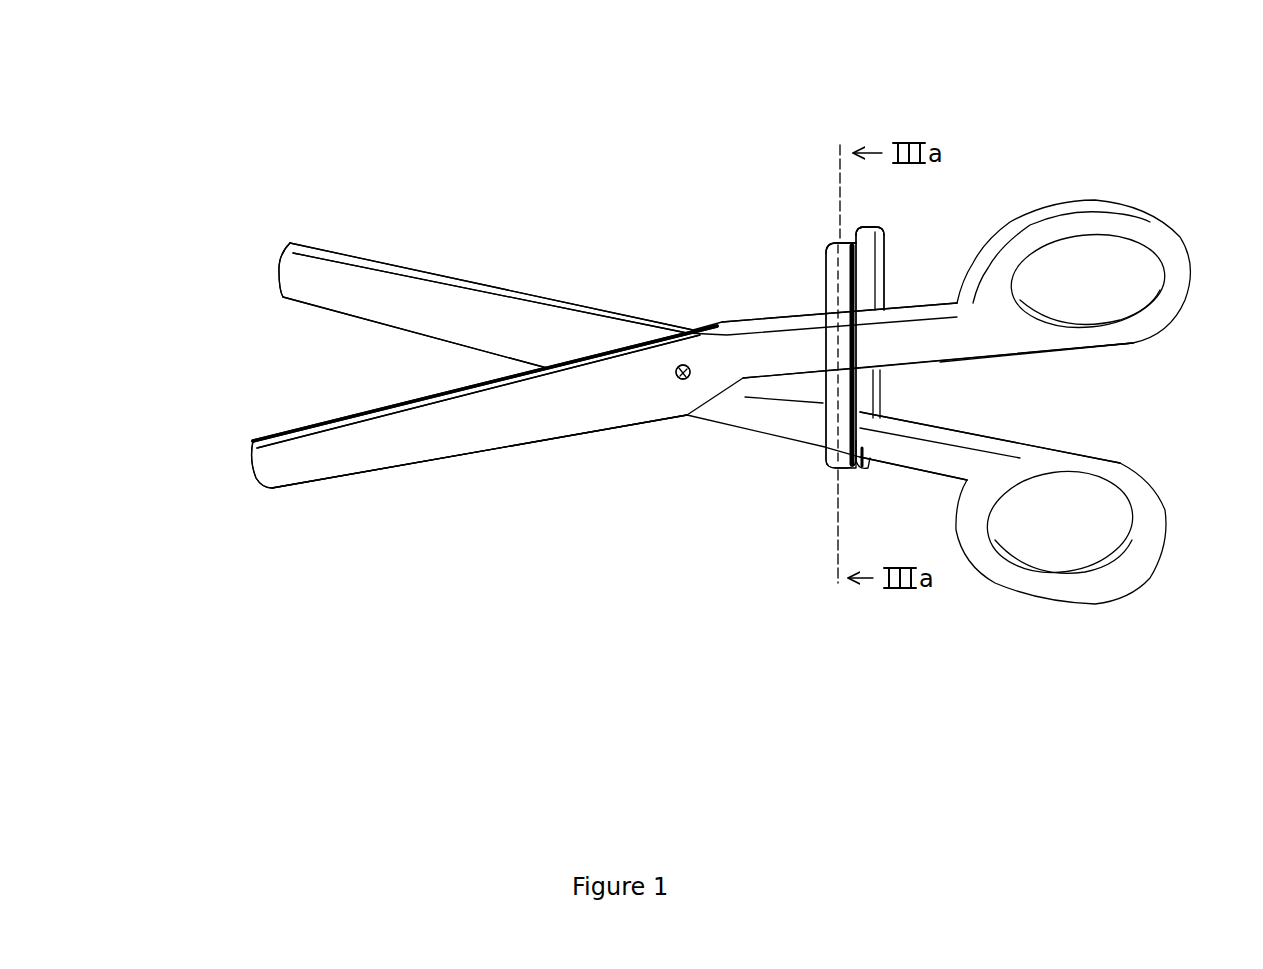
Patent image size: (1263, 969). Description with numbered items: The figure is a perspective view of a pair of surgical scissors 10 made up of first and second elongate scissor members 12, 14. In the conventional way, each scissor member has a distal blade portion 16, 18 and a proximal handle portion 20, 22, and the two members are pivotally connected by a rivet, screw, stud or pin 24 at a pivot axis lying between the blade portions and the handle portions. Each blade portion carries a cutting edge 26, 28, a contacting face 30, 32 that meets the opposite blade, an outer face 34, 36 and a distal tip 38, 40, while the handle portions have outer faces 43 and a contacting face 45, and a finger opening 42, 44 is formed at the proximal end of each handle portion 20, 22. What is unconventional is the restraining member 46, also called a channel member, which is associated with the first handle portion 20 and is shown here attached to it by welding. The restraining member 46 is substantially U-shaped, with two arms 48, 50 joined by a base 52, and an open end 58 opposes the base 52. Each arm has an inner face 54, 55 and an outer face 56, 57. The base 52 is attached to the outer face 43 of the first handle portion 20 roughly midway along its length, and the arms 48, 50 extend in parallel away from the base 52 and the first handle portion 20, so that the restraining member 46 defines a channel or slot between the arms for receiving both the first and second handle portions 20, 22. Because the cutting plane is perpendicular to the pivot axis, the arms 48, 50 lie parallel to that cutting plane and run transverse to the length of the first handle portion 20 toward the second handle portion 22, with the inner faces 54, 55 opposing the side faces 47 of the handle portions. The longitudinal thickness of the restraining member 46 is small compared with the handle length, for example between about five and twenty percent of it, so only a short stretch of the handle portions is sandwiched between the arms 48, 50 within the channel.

The pair of surgical scissors 10 is at (670, 117).
The first elongate scissor member 12 is at (302, 218).
The second elongate scissor member 14 is at (270, 505).
The distal blade portion 16 is at (378, 284).
The distal blade portion 18 is at (392, 447).
The first handle portion 20 is at (1120, 583).
The second handle portion 22 is at (1172, 268).
The pin 24 is at (681, 380).
The cutting edge 26 is at (372, 325).
The cutting edge 28 is at (318, 424).
The contacting face 30 is at (490, 300).
The contacting face 32 is at (424, 389).
The outer face 34 is at (560, 291).
The outer face 36 is at (479, 444).
The distal tip 38 is at (277, 273).
The distal tip 40 is at (254, 468).
The finger opening 42 is at (1105, 519).
The outer face 43 is at (925, 313).
The finger opening 44 is at (1125, 262).
The contacting face 45 is at (997, 448).
The restraining member 46 is at (820, 478).
The side faces 47 is at (903, 345).
The arm 48 is at (853, 232).
The arm 50 is at (824, 274).
The base 52 is at (859, 470).
The inner face 54 is at (866, 276).
The inner face 55 is at (860, 244).
The outer face 56 is at (894, 251).
The outer face 57 is at (842, 302).
The open end 58 is at (822, 245).